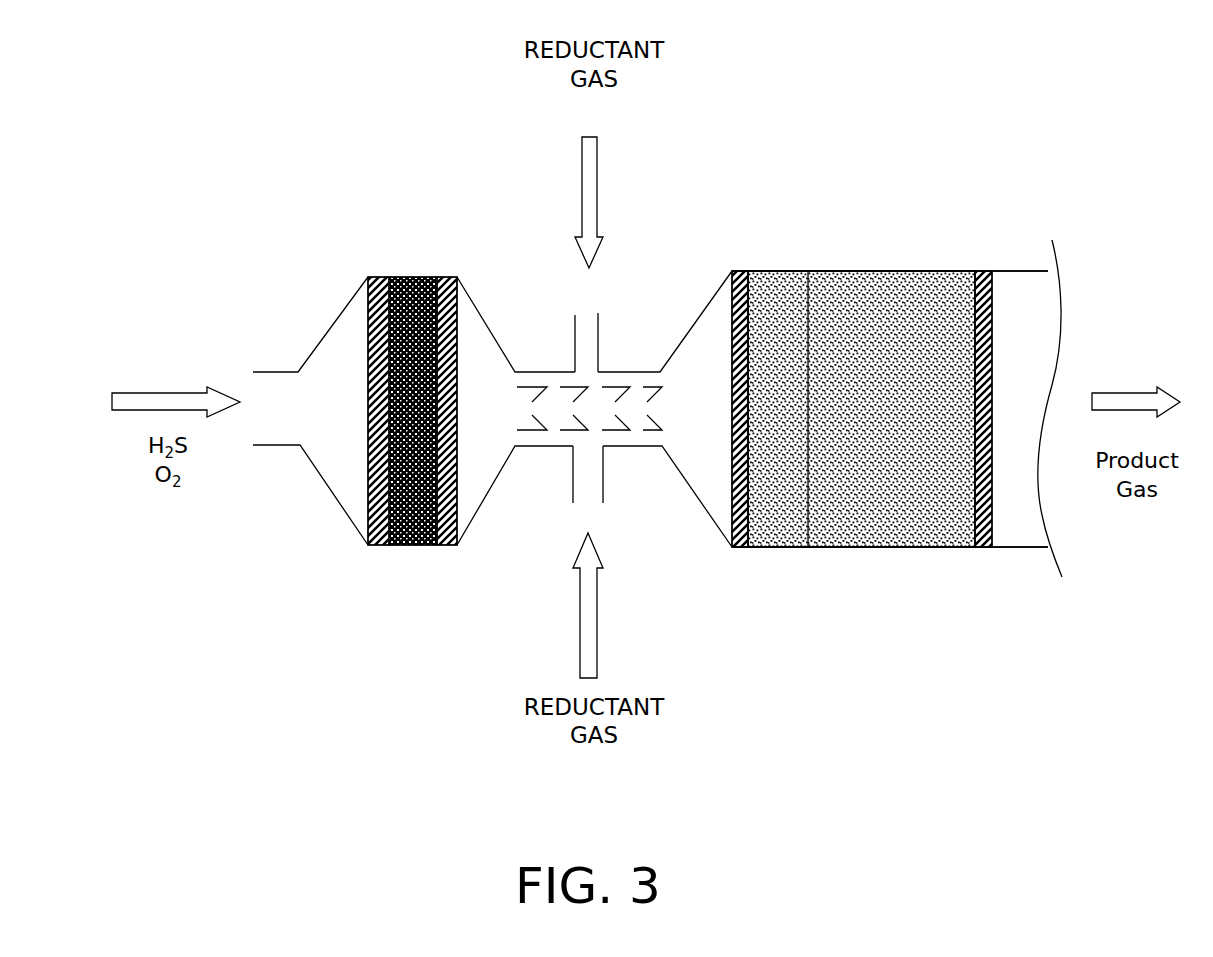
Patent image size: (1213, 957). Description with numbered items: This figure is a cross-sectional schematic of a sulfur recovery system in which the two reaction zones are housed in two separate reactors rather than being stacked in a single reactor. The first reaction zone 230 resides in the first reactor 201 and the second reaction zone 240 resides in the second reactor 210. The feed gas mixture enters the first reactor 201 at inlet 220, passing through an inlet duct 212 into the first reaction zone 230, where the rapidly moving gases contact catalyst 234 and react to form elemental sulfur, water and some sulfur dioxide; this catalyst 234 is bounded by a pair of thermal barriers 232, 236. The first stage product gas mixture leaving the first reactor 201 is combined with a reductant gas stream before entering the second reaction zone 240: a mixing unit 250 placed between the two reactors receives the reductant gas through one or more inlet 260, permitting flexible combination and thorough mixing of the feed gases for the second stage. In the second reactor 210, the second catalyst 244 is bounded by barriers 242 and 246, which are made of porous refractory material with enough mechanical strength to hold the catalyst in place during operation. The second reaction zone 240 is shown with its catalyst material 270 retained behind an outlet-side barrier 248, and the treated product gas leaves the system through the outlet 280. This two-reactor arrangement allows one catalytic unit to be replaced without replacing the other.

The first reactor 201 is at (468, 290).
The second reactor 210 is at (718, 287).
The feed gas inlet duct 212 is at (333, 445).
The inlet 220 is at (273, 393).
The first reaction zone 230 is at (406, 404).
The thermal barrier 232 is at (368, 545).
The catalyst 234 is at (408, 545).
The thermal barrier 236 is at (447, 545).
The second reaction zone 240 is at (867, 415).
The barrier 242 is at (732, 547).
The second catalyst 244 is at (782, 532).
The barrier 246 is at (898, 547).
The second bed outlet screen 248 is at (1000, 288).
The mixing unit 250 is at (558, 377).
The inlet 260 is at (592, 340).
The catalyst material 270 is at (832, 292).
The product gas outlet 280 is at (960, 530).